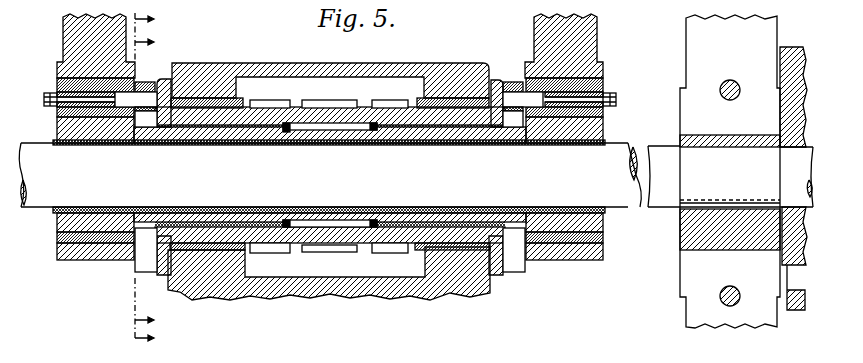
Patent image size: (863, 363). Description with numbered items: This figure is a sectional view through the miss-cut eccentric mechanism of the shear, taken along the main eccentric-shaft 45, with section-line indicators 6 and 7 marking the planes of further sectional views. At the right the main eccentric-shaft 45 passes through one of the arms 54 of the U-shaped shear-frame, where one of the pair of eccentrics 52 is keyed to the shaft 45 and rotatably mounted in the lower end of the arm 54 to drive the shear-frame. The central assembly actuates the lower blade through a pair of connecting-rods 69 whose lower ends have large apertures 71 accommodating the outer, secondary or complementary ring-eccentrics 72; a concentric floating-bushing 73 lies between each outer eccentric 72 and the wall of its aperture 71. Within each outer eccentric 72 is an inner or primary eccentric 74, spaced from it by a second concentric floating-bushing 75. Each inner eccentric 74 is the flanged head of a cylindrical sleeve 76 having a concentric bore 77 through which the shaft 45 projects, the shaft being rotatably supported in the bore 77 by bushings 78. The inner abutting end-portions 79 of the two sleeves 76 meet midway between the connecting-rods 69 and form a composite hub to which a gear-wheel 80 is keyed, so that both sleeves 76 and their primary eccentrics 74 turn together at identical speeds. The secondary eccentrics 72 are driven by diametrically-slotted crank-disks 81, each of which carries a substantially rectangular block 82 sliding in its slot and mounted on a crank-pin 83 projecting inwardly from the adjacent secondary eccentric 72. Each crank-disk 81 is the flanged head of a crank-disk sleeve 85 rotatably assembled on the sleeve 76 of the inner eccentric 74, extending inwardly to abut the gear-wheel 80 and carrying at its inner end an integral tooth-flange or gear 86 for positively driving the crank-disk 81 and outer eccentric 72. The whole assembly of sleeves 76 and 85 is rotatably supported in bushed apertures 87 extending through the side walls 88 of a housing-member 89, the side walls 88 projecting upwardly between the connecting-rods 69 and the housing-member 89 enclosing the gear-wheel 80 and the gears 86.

The main eccentric-shaft 45 is at (621, 208).
The eccentrics 52 is at (697, 236).
The arms 54 is at (685, 47).
The connecting-rods 69 is at (596, 28).
The apertures 71 is at (570, 255).
The ring-eccentrics 72 is at (586, 233).
The floating-bushing 73 is at (545, 240).
The inner eccentric 74 is at (600, 125).
The floating-bushing 75 is at (605, 112).
The cylindrical sleeve 76 is at (462, 133).
The concentric bore 77 is at (444, 143).
The bushings 78 is at (556, 146).
The inner abutting end-portions 79 is at (325, 133).
The gear-wheel 80 is at (342, 98).
The crank-disks 81 is at (498, 270).
The block 82 is at (513, 82).
The crank-pin 83 is at (518, 97).
The crank-disk sleeve 85 is at (444, 117).
The gear 86 is at (400, 98).
The bushed aperture 87 is at (463, 106).
The side walls 88 is at (438, 261).
The housing-member 89 is at (315, 293).
The section line 6 is at (151, 179).
The section line 7 is at (151, 182).